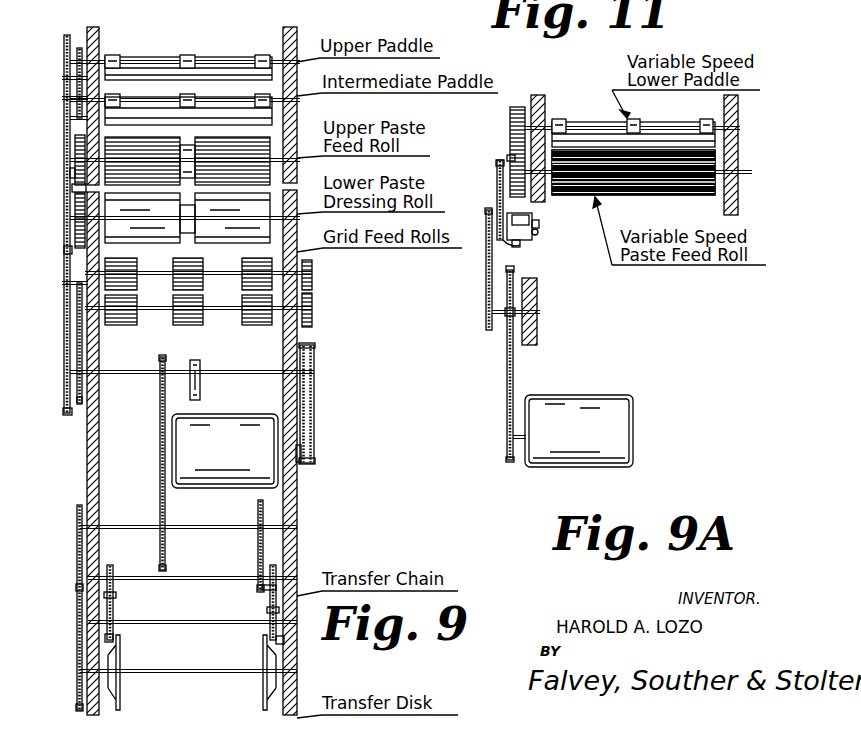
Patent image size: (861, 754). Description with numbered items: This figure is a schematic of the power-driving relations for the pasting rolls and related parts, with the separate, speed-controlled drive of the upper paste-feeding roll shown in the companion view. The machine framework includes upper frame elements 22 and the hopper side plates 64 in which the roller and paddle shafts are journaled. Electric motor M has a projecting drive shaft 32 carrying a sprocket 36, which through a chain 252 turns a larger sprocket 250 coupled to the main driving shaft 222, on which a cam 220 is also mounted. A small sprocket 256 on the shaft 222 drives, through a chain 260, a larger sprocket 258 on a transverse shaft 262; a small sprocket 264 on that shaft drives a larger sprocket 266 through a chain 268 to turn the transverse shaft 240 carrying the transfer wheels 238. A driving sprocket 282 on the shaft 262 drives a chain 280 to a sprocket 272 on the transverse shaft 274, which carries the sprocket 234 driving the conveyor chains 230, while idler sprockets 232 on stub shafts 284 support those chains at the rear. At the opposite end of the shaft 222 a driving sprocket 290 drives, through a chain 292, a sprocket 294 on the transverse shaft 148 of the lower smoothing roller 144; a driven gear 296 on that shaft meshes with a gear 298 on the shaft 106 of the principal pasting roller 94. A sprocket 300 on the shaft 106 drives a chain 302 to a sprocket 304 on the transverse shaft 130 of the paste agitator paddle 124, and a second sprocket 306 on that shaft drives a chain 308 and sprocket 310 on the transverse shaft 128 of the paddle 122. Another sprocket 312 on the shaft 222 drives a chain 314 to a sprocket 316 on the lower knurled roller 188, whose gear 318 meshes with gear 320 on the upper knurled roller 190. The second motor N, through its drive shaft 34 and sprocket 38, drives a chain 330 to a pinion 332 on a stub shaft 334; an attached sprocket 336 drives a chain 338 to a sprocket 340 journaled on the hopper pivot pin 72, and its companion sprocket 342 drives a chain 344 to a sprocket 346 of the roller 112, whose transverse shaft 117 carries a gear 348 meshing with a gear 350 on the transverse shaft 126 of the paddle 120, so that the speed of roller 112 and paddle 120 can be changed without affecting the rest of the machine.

In FIG. 9, the upper frame element 22 is at (92, 465).
In FIG. 9A, the upper frame element 22 is at (537, 292).
In FIG. 9, the drive shaft 32 is at (303, 464).
In FIG. 9A, the drive shaft 34 is at (522, 434).
In FIG. 9, the sprocket 36 is at (302, 461).
In FIG. 9A, the sprocket 38 is at (511, 462).
In FIG. 9, the side plate 64 is at (95, 28).
In FIG. 9A, the side plate 64 is at (545, 100).
In FIG. 9A, the pivot pin 72 is at (540, 222).
In FIG. 9, the pasting roller 94 is at (273, 137).
In FIG. 9, the shaft 106 is at (273, 151).
In FIG. 9A, the roller 112 is at (635, 196).
In FIG. 9A, the transverse shaft 117 is at (738, 170).
In FIG. 9A, the paste agitator paddle 120 is at (645, 135).
In FIG. 9, the paste agitator paddle 122 is at (265, 118).
In FIG. 9, the paste agitator paddle 124 is at (210, 72).
In FIG. 9A, the transverse shaft 126 is at (586, 124).
In FIG. 9, the transverse shaft 128 is at (132, 98).
In FIG. 9, the transverse shaft 130 is at (157, 59).
In FIG. 9, the lower smoothing roller 144 is at (210, 243).
In FIG. 9, the transverse shaft 148 is at (297, 219).
In FIG. 9, the knurled roller 188 is at (134, 320).
In FIG. 9, the knurled roller 190 is at (134, 258).
In FIG. 9, the cam 220 is at (197, 362).
In FIG. 9, the main driving shaft 222 is at (252, 373).
In FIG. 9, the conveyor chain 230 is at (116, 596).
In FIG. 9, the idler sprocket 232 is at (108, 640).
In FIG. 9, the sprocket 234 is at (110, 565).
In FIG. 9, the transfer wheel 238 is at (120, 652).
In FIG. 9, the transverse shaft 240 is at (162, 670).
In FIG. 9, the sprocket 250 is at (314, 345).
In FIG. 9, the chain 252 is at (315, 411).
In FIG. 9, the sprocket 256 is at (159, 358).
In FIG. 9, the sprocket 258 is at (166, 569).
In FIG. 9, the chain 260 is at (160, 432).
In FIG. 9, the transverse shaft 262 is at (128, 526).
In FIG. 9, the sprocket 264 is at (77, 506).
In FIG. 9, the sprocket 266 is at (77, 709).
In FIG. 9, the chain 268 is at (77, 588).
In FIG. 9, the sprocket 272 is at (263, 590).
In FIG. 9, the transverse shaft 274 is at (207, 580).
In FIG. 9, the chain 280 is at (258, 550).
In FIG. 9, the driving sprocket 282 is at (260, 502).
In FIG. 9, the shaft 284 is at (116, 622).
In FIG. 9, the driving sprocket 290 is at (66, 413).
In FIG. 9, the chain 292 is at (66, 251).
In FIG. 9, the sprocket 294 is at (72, 188).
In FIG. 9, the driven gear 296 is at (75, 208).
In FIG. 9, the gear 298 is at (71, 174).
In FIG. 9, the sprocket 300 is at (75, 150).
In FIG. 9, the chain 302 is at (77, 118).
In FIG. 9, the sprocket 304 is at (67, 35).
In FIG. 9, the sprocket 306 is at (80, 48).
In FIG. 9, the chain 308 is at (64, 78).
In FIG. 9, the sprocket 310 is at (64, 98).
In FIG. 9, the sprocket 312 is at (79, 405).
In FIG. 9, the chain 314 is at (77, 331).
In FIG. 9, the sprocket 316 is at (78, 284).
In FIG. 9, the gear 318 is at (313, 301).
In FIG. 9, the gear 320 is at (313, 269).
In FIG. 9A, the chain 330 is at (507, 368).
In FIG. 9A, the pinion 332 is at (514, 268).
In FIG. 9A, the stub shaft 334 is at (505, 316).
In FIG. 9A, the sprocket 336 is at (489, 324).
In FIG. 9A, the chain 338 is at (488, 272).
In FIG. 9A, the sprocket 340 is at (488, 210).
In FIG. 9A, the sprocket 342 is at (521, 245).
In FIG. 9A, the chain 344 is at (497, 182).
In FIG. 9A, the sprocket 346 is at (500, 162).
In FIG. 9A, the gear 348 is at (510, 156).
In FIG. 9A, the gear 350 is at (518, 107).
In FIG. 9, the electric motor M is at (212, 488).
In FIG. 9A, the motor N is at (573, 400).